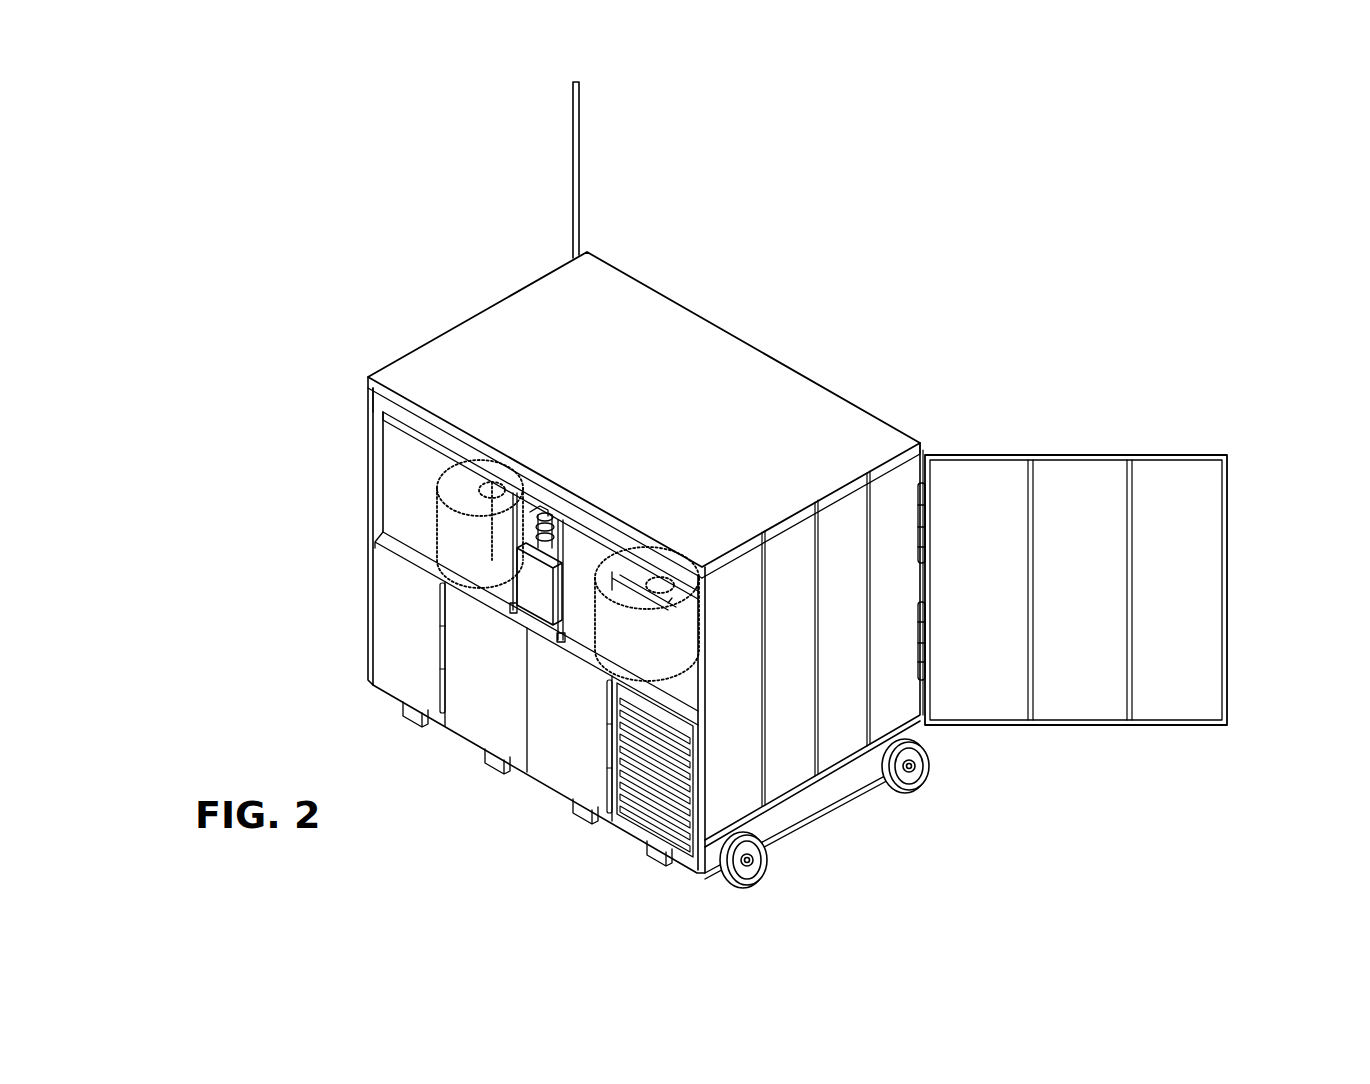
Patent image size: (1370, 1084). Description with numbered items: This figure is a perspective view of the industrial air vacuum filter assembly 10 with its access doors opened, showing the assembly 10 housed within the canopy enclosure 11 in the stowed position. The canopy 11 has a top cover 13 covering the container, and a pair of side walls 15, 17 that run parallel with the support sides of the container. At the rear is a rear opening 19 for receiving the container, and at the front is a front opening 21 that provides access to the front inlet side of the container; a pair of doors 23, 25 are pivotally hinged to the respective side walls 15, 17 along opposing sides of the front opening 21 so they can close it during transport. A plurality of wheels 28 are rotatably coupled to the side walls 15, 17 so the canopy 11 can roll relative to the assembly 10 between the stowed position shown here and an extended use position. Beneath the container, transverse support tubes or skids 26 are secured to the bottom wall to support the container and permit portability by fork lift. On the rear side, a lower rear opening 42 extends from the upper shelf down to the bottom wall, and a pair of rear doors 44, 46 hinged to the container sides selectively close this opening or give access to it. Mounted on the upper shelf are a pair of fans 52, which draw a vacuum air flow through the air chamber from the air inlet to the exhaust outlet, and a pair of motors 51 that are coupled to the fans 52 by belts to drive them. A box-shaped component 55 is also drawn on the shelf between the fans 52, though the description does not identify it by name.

The industrial air vacuum filter assembly 10 is at (775, 504).
The canopy enclosure 11 is at (603, 402).
The top cover 13 is at (644, 409).
The side wall 15 is at (305, 531).
The side wall 17 is at (814, 645).
The rear opening 19 is at (484, 476).
The front opening 21 is at (821, 456).
The door 23 is at (633, 170).
The door 25 is at (1120, 590).
The support tubes or skids 26 is at (522, 814).
The wheels 28 is at (863, 816).
The lower rear opening 42 is at (633, 788).
The rear door 44 is at (385, 656).
The rear door 46 is at (516, 720).
The motors 51 is at (600, 524).
The fans 52 is at (503, 606).
The control box 55 is at (539, 584).